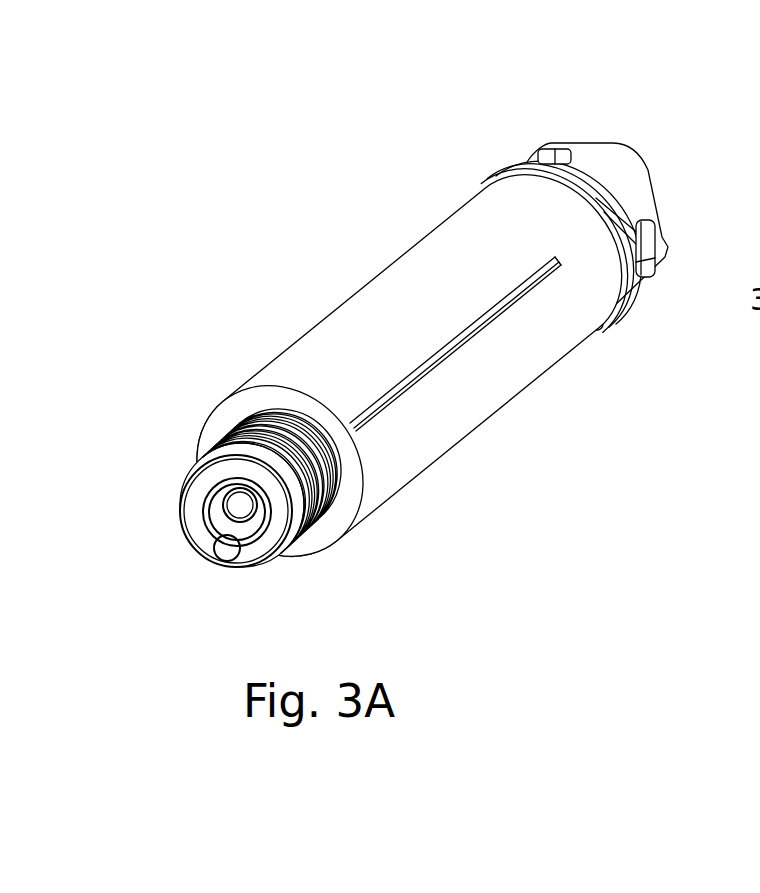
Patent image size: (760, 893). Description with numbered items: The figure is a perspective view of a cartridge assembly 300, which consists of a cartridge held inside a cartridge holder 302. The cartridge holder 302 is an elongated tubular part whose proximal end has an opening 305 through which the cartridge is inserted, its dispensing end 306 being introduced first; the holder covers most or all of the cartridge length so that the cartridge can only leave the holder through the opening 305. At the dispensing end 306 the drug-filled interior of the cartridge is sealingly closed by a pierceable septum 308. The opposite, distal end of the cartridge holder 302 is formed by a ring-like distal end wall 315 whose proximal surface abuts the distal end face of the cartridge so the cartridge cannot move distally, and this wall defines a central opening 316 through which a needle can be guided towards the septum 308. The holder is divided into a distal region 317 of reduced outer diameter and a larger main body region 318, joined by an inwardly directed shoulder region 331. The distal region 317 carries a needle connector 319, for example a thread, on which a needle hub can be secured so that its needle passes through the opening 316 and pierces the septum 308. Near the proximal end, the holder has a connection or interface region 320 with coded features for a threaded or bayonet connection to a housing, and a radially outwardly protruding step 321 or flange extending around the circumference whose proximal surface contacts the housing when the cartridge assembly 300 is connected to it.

The cartridge assembly 300 is at (321, 210).
The cartridge holder 302 is at (447, 253).
The opening 305 is at (662, 178).
The dispensing end 306 is at (243, 512).
The septum 308 is at (226, 503).
The distal end wall 315 is at (203, 477).
The opening 316 is at (222, 517).
The distal region 317 is at (257, 440).
The main body region 318 is at (363, 322).
The needle connector 319 is at (310, 522).
The connection or interface region 320 is at (600, 160).
The step 321 is at (507, 187).
The shoulder region 331 is at (343, 507).